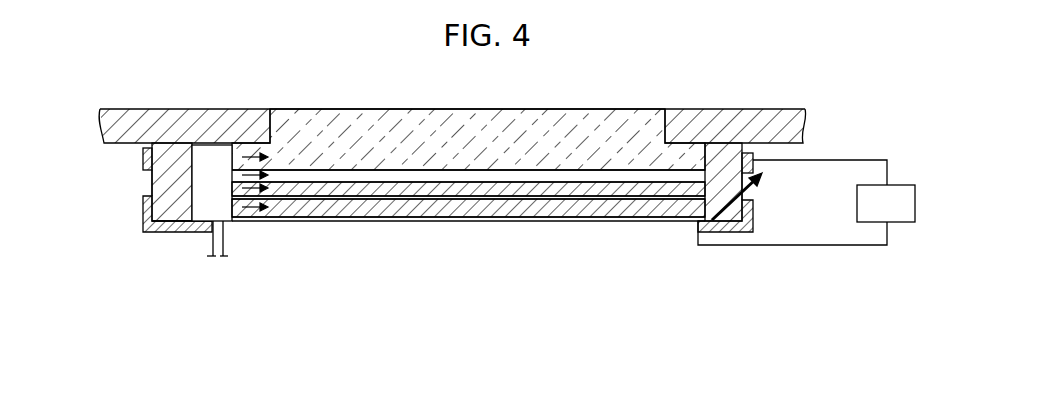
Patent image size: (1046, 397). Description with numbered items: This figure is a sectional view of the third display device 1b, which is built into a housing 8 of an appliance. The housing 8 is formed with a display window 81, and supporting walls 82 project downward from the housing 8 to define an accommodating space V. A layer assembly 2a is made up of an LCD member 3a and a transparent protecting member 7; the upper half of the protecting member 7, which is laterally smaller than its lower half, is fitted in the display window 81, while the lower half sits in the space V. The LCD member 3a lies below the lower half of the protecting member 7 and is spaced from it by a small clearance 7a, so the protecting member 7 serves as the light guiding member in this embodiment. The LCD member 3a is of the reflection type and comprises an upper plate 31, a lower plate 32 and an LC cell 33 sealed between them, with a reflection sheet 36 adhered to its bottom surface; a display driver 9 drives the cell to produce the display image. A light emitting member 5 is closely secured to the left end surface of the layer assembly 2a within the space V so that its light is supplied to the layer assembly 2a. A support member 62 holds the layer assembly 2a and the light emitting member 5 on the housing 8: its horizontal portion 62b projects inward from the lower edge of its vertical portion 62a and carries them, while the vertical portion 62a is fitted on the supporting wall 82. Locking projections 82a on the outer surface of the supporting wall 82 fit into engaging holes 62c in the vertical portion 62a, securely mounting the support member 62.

The third display device 1b is at (593, 180).
The layer assembly 2a is at (693, 308).
The LCD member 3a is at (672, 258).
The light emitting member 5 is at (216, 208).
The protecting member 7 is at (488, 140).
The clearance 7a is at (425, 173).
The housing 8 is at (216, 112).
The display window 81 is at (283, 125).
The supporting wall 82 is at (177, 170).
The locking projection 82a is at (150, 183).
The display driver 9 is at (902, 185).
The upper plate 31 is at (651, 190).
The lower plate 32 is at (580, 222).
The LC cell 33 is at (612, 220).
The reflection sheet 36 is at (557, 222).
The support member 62 is at (413, 229).
The vertical portion 62a is at (145, 218).
The horizontal portion 62b is at (182, 253).
The engaging hole 62c is at (143, 157).
The accommodating space V is at (366, 176).